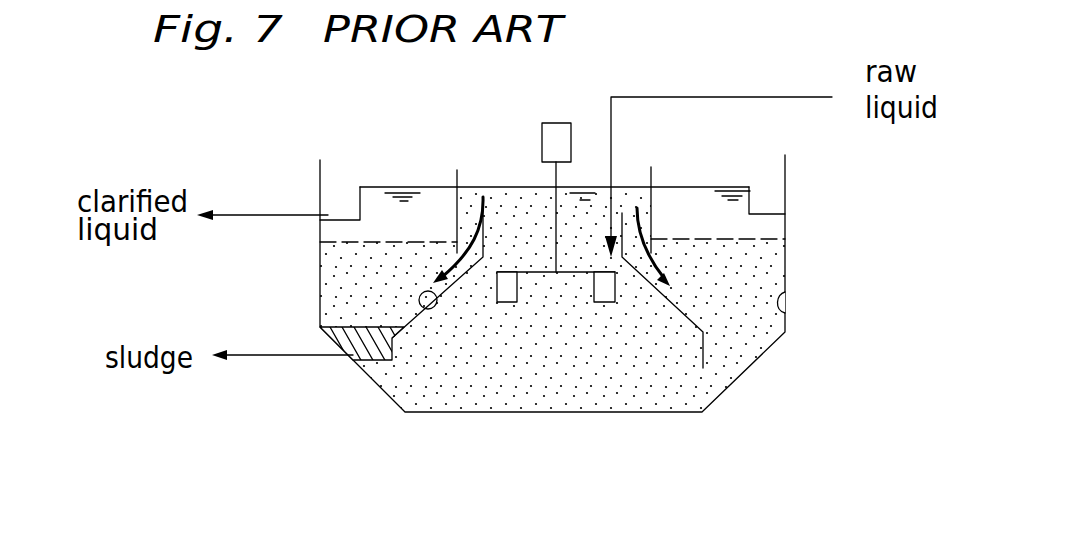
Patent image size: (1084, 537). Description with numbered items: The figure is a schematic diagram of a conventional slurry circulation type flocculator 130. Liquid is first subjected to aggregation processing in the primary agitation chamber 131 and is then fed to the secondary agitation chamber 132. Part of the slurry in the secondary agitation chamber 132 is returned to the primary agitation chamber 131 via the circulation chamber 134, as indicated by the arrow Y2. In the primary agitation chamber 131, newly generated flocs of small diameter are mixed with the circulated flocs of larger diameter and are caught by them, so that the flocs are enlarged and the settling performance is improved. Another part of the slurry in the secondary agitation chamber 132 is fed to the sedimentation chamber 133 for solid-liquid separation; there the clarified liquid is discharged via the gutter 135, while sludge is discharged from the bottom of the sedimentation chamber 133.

The slurry circulation type flocculator 130 is at (794, 188).
The primary agitation chamber 131 is at (566, 367).
The secondary agitation chamber 132 is at (522, 223).
The sedimentation chamber 133 is at (433, 308).
The circulation chamber 134 is at (786, 313).
The gutter 135 is at (360, 198).
The arrow Y2 is at (456, 270).